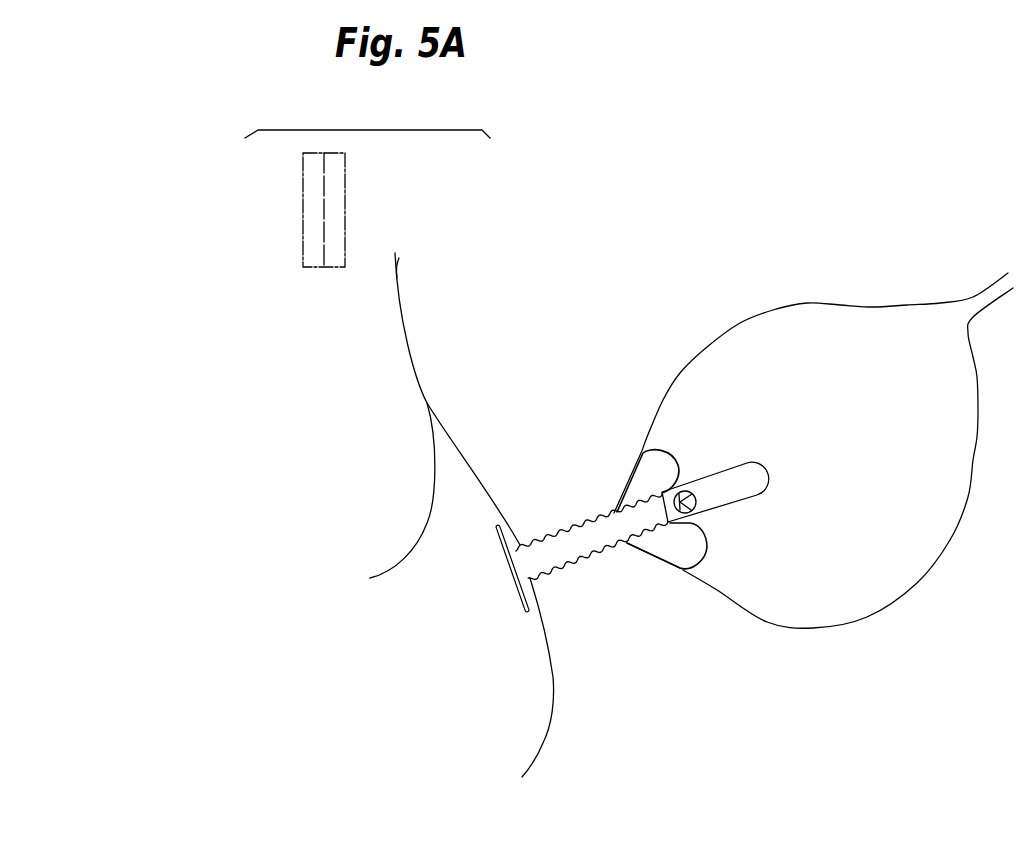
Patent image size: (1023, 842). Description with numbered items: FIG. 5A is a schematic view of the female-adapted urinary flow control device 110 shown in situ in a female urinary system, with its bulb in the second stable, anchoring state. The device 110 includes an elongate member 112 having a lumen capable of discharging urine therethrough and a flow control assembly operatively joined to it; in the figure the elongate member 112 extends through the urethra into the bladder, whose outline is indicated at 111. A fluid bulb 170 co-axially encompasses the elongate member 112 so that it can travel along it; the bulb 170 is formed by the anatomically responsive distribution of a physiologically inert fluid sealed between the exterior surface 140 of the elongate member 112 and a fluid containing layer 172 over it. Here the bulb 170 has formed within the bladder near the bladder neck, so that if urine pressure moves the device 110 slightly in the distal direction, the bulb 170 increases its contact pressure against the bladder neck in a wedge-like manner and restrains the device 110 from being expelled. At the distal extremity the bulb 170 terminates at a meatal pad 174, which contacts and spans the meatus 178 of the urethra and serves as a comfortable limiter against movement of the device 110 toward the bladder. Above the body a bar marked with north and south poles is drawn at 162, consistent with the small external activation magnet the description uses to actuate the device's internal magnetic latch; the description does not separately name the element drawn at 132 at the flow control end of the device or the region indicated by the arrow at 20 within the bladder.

The stomach interior 20 is at (748, 512).
The urinary flow control device 110 is at (630, 573).
The stomach 111 is at (967, 497).
The elongate member 112 is at (600, 513).
The distal tip 132 is at (758, 467).
The exterior surface 140 is at (687, 571).
The magnet 162 is at (291, 208).
The fluid bulb 170 is at (660, 457).
The fluid containing layer 172 is at (707, 557).
The meatal pad 174 is at (522, 601).
The meatus 178 is at (521, 524).